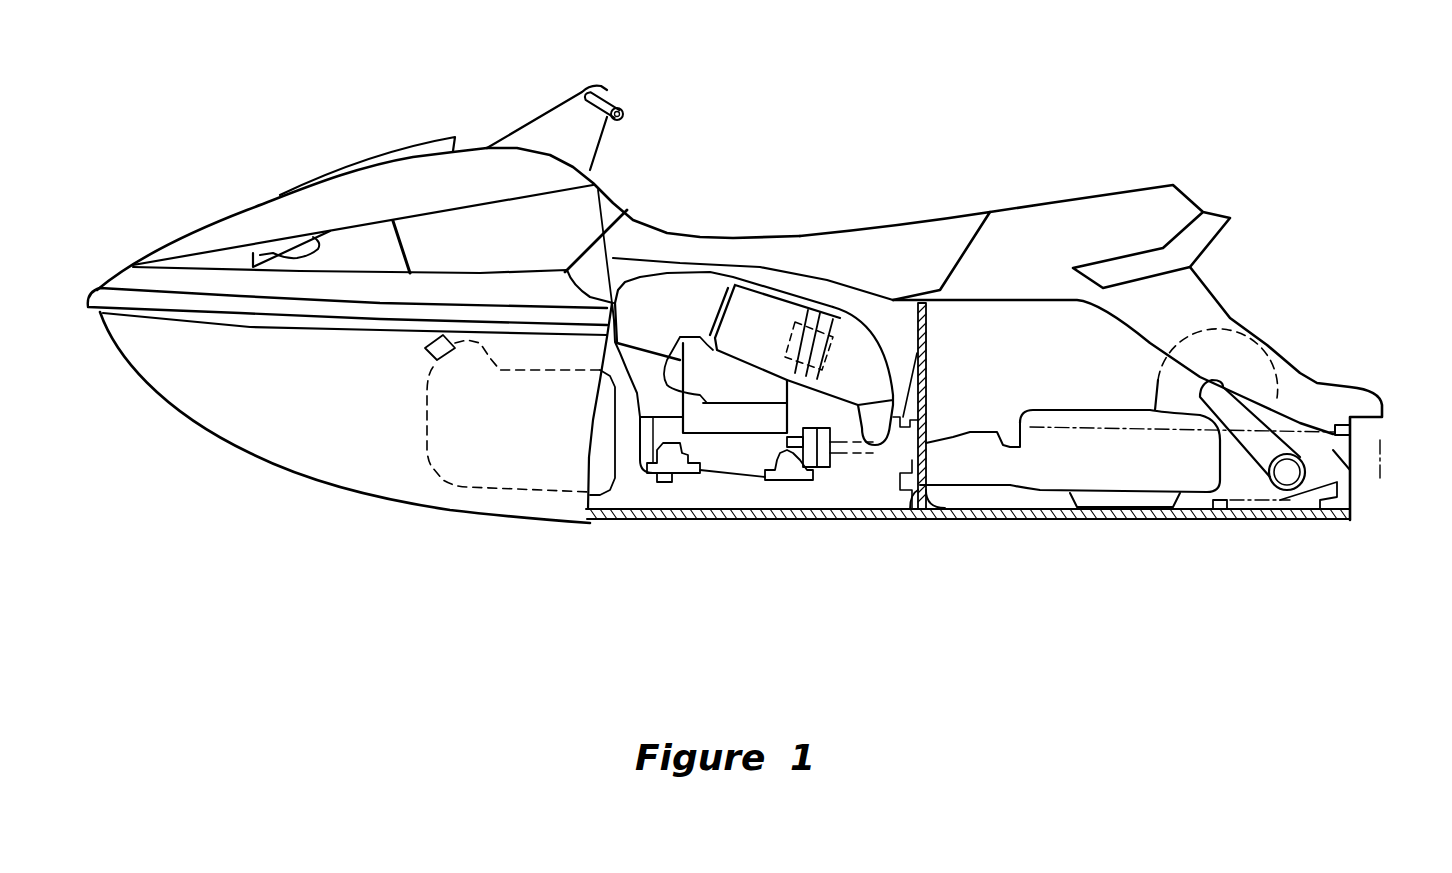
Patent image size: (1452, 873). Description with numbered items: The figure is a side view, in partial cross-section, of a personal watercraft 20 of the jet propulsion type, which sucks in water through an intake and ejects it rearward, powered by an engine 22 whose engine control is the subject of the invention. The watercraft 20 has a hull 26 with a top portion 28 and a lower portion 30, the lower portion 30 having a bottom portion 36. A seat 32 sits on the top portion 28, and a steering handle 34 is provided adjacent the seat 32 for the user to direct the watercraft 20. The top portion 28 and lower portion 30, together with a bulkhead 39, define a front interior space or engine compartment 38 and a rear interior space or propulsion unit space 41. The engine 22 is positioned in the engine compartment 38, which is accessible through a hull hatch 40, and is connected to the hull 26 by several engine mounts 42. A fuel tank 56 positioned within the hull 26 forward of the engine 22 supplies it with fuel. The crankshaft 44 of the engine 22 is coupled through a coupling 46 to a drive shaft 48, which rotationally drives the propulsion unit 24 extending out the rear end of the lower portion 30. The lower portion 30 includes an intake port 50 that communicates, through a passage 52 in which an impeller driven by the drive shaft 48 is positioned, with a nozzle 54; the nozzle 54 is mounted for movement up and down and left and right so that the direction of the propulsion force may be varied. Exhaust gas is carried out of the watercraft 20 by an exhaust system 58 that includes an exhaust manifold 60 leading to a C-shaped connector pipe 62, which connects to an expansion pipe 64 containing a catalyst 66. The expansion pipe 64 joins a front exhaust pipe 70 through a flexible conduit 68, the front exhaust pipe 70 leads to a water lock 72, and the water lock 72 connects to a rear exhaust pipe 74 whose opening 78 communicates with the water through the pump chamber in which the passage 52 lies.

The personal watercraft 20 is at (1003, 160).
The engine 22 is at (743, 520).
The propulsion unit 24 is at (1338, 451).
The hull 26 is at (347, 419).
The top portion 28 is at (347, 376).
The lower portion 30 is at (107, 487).
The seat 32 is at (738, 224).
The steering handle 34 is at (577, 101).
The bottom portion 36 is at (968, 561).
The engine compartment 38 is at (640, 502).
The bulkhead 39 is at (948, 441).
The hull hatch 40 is at (362, 201).
The propulsion unit space 41 is at (1030, 372).
The engine mounts 42 is at (723, 525).
The crankshaft 44 is at (811, 537).
The coupling 46 is at (1087, 523).
The drive shaft 48 is at (852, 499).
The intake port 50 is at (1098, 544).
The passage 52 is at (1245, 549).
The nozzle 54 is at (1403, 497).
The fuel tank 56 is at (433, 478).
The exhaust system 58 is at (755, 280).
The exhaust manifold 60 is at (725, 461).
The C-shaped connector pipe 62 is at (766, 279).
The expansion pipe 64 is at (850, 318).
The catalyst 66 is at (810, 278).
The flexible conduit 68 is at (932, 352).
The front exhaust pipe 70 is at (970, 497).
The water lock 72 is at (1182, 380).
The rear exhaust pipe 74 is at (1173, 397).
The opening 78 is at (1252, 481).